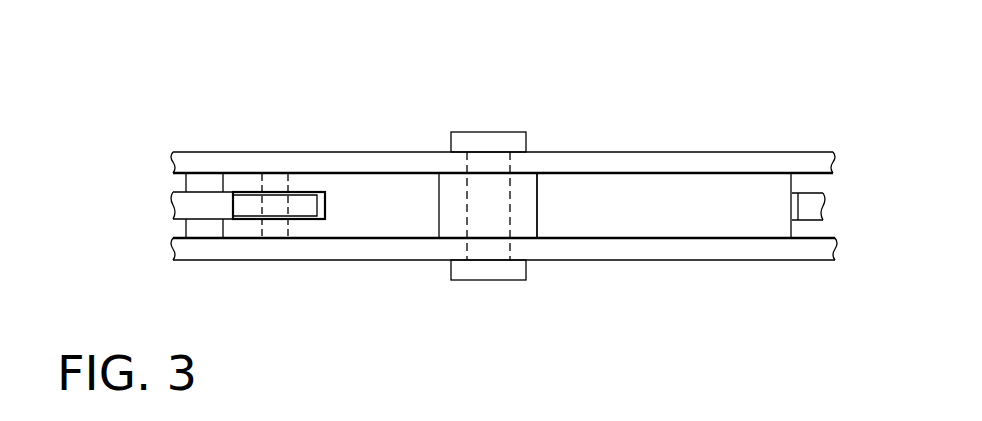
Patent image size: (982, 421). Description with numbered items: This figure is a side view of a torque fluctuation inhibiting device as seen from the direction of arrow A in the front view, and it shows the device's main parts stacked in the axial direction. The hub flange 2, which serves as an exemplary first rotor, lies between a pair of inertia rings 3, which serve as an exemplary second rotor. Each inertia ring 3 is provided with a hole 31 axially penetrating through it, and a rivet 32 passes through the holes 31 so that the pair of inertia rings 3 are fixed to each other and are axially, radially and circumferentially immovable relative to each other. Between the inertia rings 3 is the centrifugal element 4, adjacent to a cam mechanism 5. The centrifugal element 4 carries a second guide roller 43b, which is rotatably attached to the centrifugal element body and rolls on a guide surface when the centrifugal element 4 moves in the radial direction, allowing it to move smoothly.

The hub flange 2 is at (178, 205).
The inertia ring 3 is at (743, 162).
The hole 31 is at (498, 162).
The rivet 32 is at (480, 132).
The centrifugal element 4 is at (668, 185).
The cam mechanism 5 is at (432, 198).
The second guide roller 43b is at (247, 203).